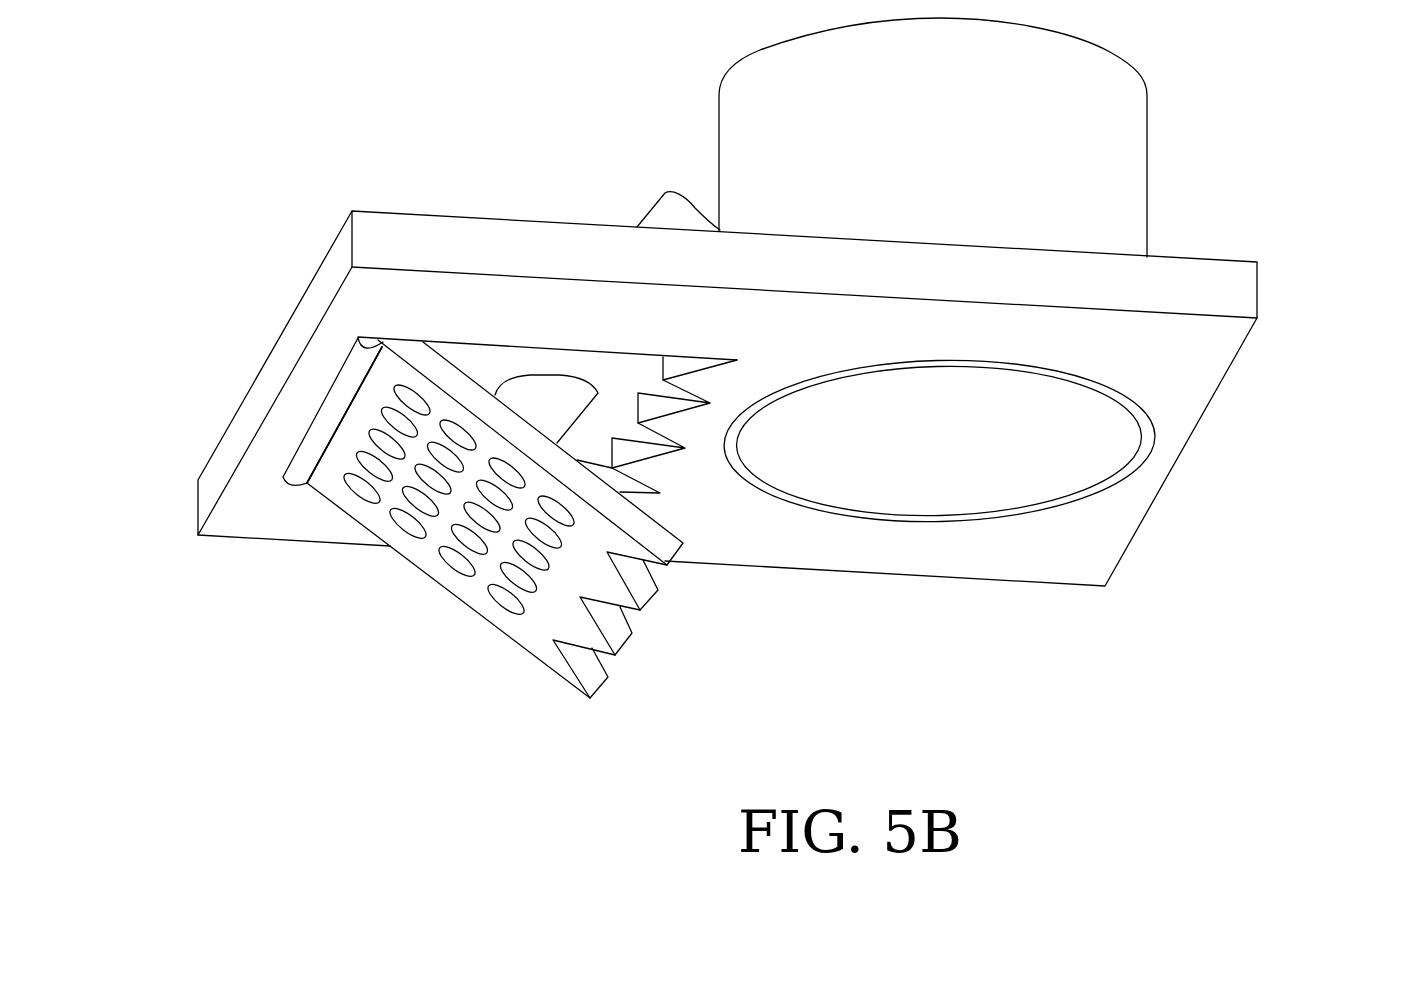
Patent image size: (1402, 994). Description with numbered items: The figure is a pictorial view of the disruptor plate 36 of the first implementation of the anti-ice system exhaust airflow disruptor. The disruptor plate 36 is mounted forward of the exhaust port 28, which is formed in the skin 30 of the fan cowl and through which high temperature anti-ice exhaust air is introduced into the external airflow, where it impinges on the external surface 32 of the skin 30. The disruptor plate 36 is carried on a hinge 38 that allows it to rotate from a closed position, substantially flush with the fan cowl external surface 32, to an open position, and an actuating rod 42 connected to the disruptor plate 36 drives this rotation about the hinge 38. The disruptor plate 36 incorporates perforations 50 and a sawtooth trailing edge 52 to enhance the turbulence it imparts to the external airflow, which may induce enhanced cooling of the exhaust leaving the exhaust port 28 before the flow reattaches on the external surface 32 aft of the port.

The exhaust port 28 is at (988, 452).
The skin 30 is at (1198, 280).
The external surface 32 is at (1220, 365).
The disruptor plate 36 is at (388, 431).
The hinge 38 is at (316, 435).
The actuating rod 42 is at (538, 398).
The perforations 50 is at (471, 540).
The sawtooth trailing edge 52 is at (615, 627).